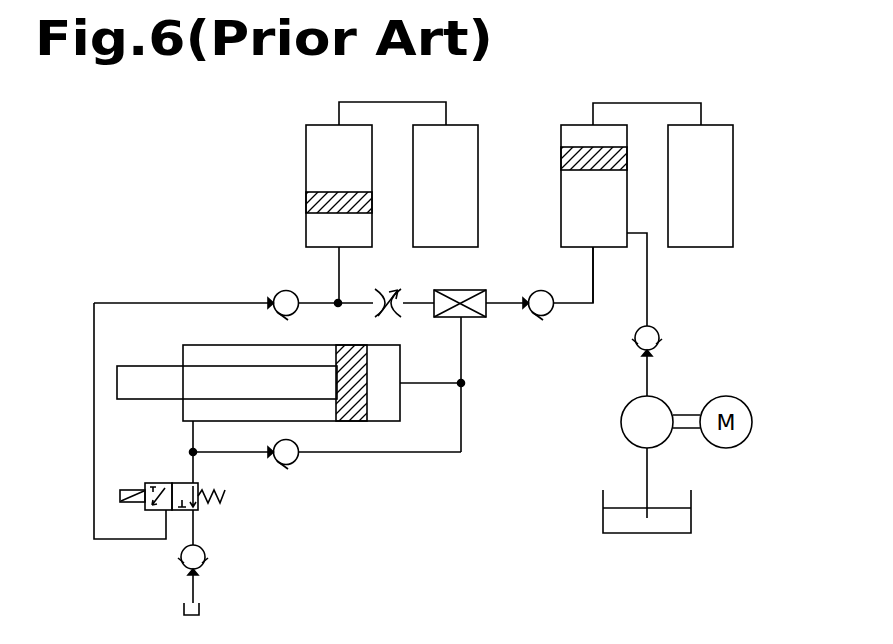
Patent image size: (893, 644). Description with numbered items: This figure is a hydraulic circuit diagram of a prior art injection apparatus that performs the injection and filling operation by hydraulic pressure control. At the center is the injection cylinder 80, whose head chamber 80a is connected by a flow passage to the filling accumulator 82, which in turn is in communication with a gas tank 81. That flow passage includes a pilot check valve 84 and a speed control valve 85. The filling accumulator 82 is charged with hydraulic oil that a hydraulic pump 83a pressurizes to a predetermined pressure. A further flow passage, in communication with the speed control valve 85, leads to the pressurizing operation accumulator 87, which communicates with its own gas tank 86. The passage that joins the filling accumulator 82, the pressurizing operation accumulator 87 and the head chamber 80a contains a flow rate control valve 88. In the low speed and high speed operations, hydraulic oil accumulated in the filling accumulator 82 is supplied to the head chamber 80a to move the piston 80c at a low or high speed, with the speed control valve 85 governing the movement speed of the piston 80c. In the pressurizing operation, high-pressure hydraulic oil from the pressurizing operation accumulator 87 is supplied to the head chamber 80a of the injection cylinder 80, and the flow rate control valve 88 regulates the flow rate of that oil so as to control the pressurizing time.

The injection cylinder 80 is at (210, 345).
The head chamber 80a is at (392, 405).
The piston 80c is at (365, 361).
The gas tank 81 is at (733, 188).
The filling accumulator 82 is at (561, 188).
The hydraulic pump 83a is at (621, 424).
The pilot check valve 84 is at (550, 316).
The speed control valve 85 is at (485, 318).
The gas tank 86 is at (478, 155).
The pressurizing operation accumulator 87 is at (306, 153).
The flow rate control valve 88 is at (403, 275).